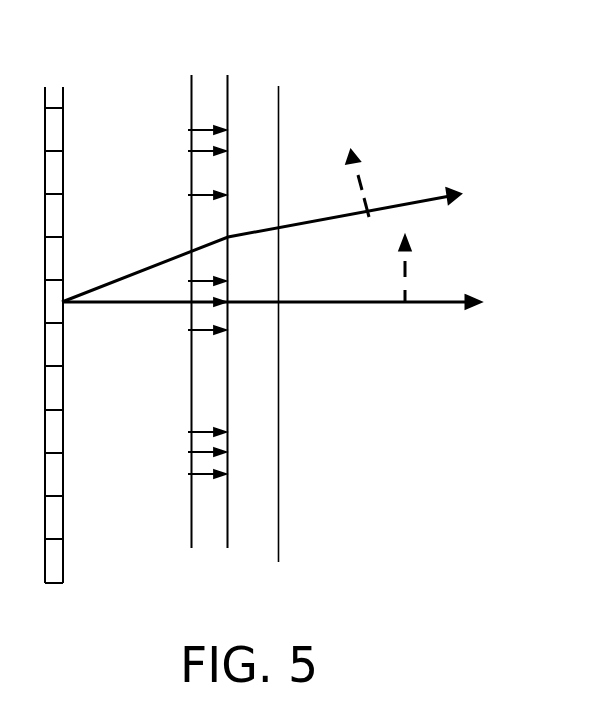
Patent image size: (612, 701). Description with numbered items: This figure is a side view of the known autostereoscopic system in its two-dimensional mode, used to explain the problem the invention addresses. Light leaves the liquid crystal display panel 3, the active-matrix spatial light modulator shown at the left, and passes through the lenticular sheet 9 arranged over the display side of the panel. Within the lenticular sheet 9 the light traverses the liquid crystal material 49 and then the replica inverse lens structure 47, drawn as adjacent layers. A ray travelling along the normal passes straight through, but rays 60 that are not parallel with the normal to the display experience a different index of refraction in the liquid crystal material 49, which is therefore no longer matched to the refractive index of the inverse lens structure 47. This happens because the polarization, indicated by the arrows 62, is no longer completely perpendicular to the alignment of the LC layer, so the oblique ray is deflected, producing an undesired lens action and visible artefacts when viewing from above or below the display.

The liquid crystal display panel 3 is at (57, 85).
The lenticular sheet 9 is at (191, 62).
The liquid crystal material 49 is at (210, 530).
The inverse lens structure 47 is at (256, 530).
The rays 60 is at (430, 203).
The arrows 62 is at (363, 177).